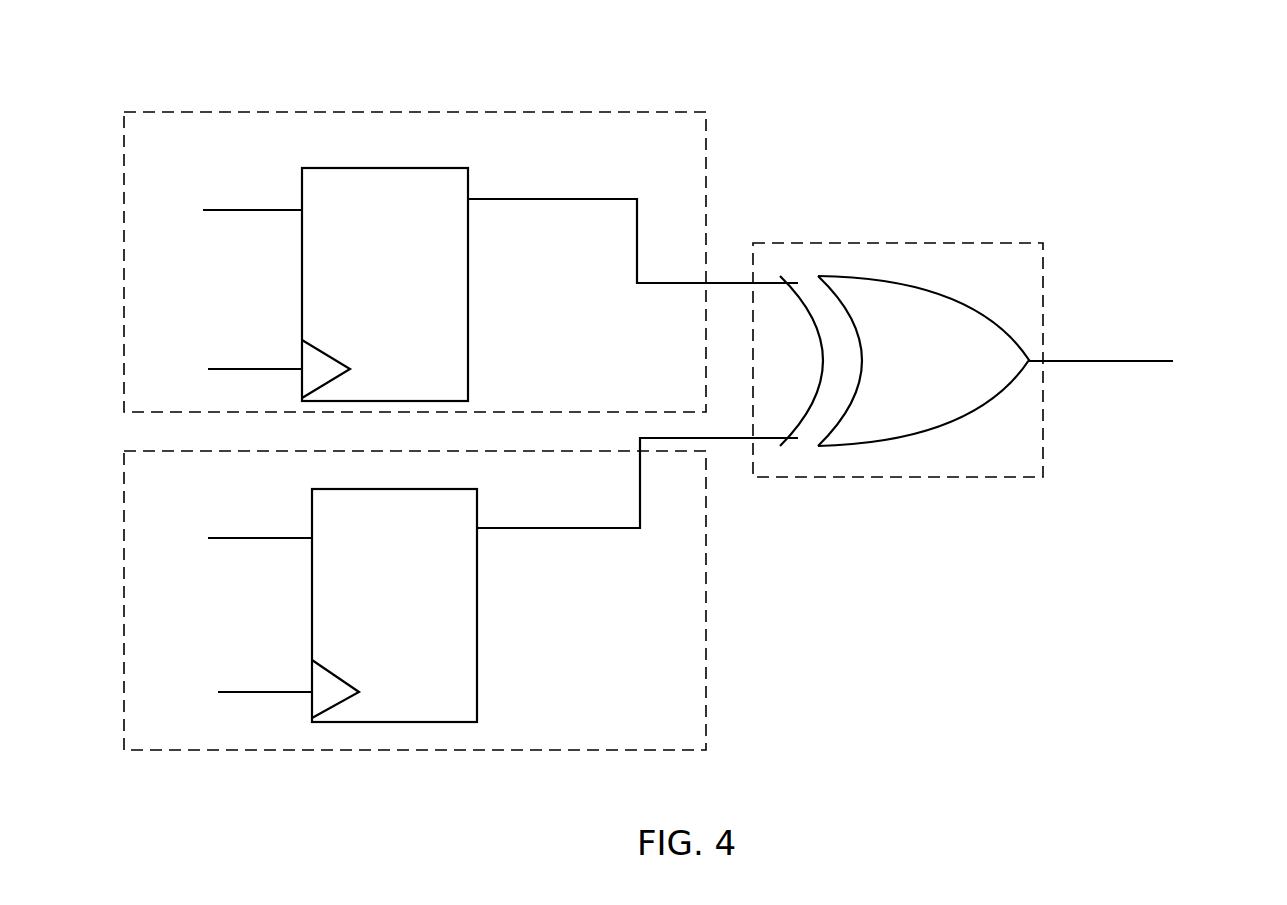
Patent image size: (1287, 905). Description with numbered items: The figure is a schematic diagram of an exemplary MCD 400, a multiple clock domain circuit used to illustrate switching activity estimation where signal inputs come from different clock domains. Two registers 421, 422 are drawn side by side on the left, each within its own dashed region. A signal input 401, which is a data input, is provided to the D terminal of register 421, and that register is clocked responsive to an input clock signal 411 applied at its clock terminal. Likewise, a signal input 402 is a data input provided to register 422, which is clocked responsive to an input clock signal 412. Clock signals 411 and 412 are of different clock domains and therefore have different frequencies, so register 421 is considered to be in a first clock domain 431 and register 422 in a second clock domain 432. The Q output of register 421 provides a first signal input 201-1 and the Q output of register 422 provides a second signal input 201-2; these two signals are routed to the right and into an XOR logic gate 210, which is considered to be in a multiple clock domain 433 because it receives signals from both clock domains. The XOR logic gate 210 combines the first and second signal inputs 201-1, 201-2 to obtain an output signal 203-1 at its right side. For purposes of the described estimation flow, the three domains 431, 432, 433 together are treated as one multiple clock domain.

The MCD 400 is at (1148, 83).
The first clock domain 431 is at (706, 148).
The second clock domain 432 is at (706, 543).
The multiple clock domain 433 is at (947, 243).
The register 421 is at (385, 284).
The register 422 is at (394, 605).
The XOR logic gate 210 is at (904, 361).
The signal input 401 is at (252, 210).
The signal input 402 is at (240, 538).
The input clock signal 411 is at (254, 369).
The input clock signal 412 is at (245, 692).
The first signal input 201-1 is at (542, 199).
The second signal input 201-2 is at (517, 528).
The output signal 203-1 is at (1065, 361).